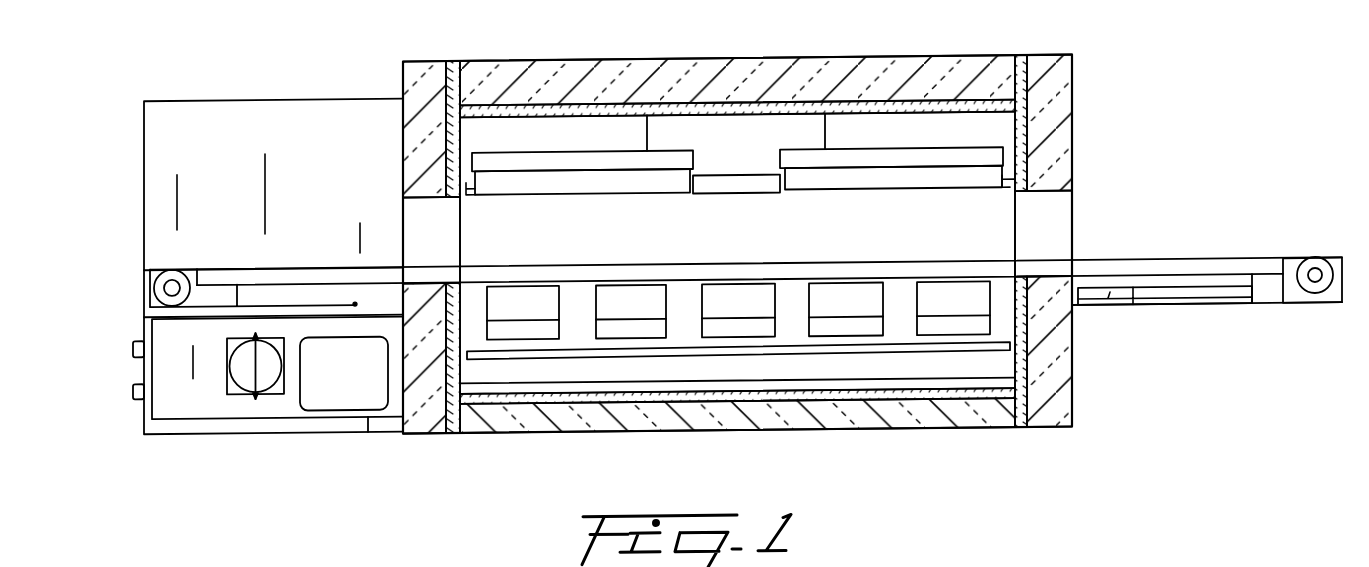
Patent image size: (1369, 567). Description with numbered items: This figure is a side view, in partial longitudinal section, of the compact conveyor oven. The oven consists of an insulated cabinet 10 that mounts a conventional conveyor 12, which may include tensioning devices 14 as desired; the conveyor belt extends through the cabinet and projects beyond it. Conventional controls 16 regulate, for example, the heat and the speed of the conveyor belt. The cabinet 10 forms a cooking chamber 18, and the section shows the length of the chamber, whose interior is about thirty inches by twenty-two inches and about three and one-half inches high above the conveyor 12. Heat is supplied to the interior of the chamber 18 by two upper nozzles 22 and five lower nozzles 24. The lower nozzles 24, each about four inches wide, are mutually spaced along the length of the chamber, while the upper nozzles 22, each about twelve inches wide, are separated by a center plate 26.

The insulated cabinet 10 is at (900, 58).
The conveyor 12 is at (1140, 252).
The tensioning devices 14 is at (1202, 312).
The controls 16 is at (122, 377).
The cooking chamber 18 is at (712, 238).
The upper nozzles 22 is at (550, 192).
The lower nozzles 24 is at (612, 283).
The center plate 26 is at (725, 180).